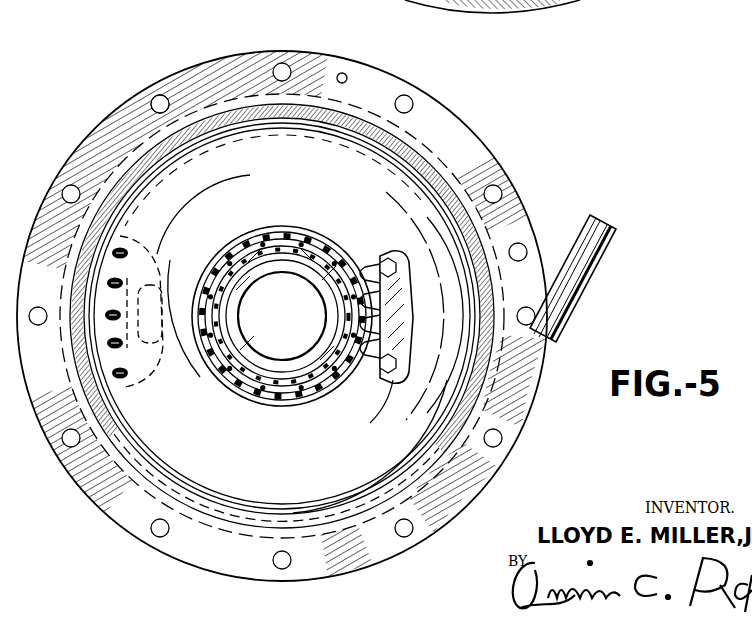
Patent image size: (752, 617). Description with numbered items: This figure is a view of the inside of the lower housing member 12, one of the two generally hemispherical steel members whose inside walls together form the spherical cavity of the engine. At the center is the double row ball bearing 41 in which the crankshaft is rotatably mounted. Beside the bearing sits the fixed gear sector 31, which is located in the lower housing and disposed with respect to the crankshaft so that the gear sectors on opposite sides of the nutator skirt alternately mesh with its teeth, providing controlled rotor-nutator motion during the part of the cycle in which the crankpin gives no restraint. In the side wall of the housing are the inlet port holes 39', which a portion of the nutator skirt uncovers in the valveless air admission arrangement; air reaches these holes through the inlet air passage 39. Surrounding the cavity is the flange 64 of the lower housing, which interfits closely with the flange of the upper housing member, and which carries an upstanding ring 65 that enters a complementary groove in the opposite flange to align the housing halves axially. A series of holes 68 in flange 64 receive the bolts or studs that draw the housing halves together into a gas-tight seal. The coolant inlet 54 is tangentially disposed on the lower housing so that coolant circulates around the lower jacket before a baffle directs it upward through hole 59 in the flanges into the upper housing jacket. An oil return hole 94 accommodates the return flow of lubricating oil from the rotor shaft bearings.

The lower housing member 12 is at (115, 112).
The holes in flange 64 68 is at (268, 54).
The oil return hole 94 is at (348, 78).
The flange of lower housing 64 is at (457, 149).
The upstanding ring 65 is at (127, 465).
The hole in the flanges 59 is at (521, 246).
The coolant inlet 54 is at (604, 262).
The fixed gear sector 31 is at (398, 322).
The double row ball bearing 41 is at (266, 228).
The inlet air passage 39 is at (145, 311).
The inlet port holes 39' is at (155, 367).